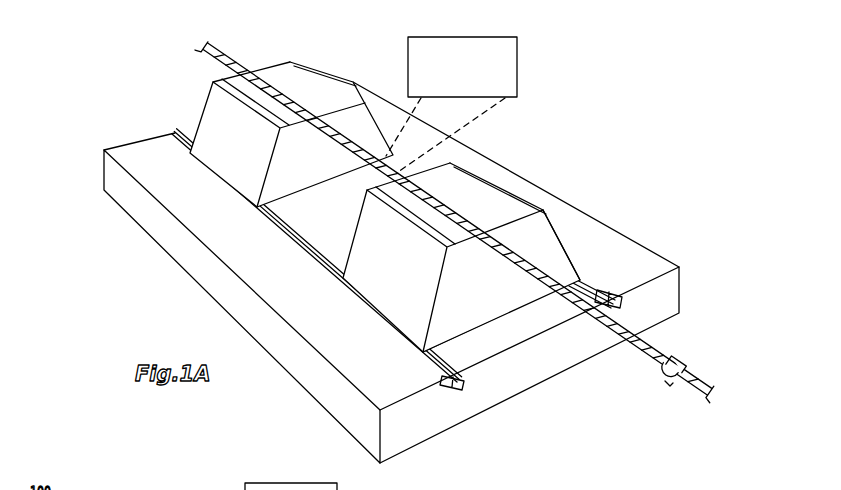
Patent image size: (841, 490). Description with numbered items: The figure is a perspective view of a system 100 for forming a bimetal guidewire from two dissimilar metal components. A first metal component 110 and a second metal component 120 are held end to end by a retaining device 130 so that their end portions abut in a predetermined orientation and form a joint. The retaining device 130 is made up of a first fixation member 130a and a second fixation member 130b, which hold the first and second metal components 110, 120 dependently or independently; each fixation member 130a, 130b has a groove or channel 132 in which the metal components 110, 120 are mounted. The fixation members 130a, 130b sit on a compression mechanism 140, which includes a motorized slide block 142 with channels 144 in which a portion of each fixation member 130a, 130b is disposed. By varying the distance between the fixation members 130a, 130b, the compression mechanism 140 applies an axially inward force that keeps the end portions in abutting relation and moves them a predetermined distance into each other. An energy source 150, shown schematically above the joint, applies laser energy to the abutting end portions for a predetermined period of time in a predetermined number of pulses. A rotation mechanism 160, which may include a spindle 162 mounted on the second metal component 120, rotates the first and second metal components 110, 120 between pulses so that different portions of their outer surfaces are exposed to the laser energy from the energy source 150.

The system 100 is at (64, 65).
The first metal component 110 is at (242, 58).
The second metal component 120 is at (632, 361).
The retaining device 130 is at (568, 216).
The first fixation member 130a is at (247, 149).
The second fixation member 130b is at (405, 272).
The groove or channel 132 is at (279, 87).
The compression mechanism 140 is at (117, 141).
The motorized slide block 142 is at (271, 267).
The channel 144 is at (595, 278).
The energy source 150 is at (473, 75).
The rotation mechanism 160 is at (691, 357).
The spindle 162 is at (666, 387).